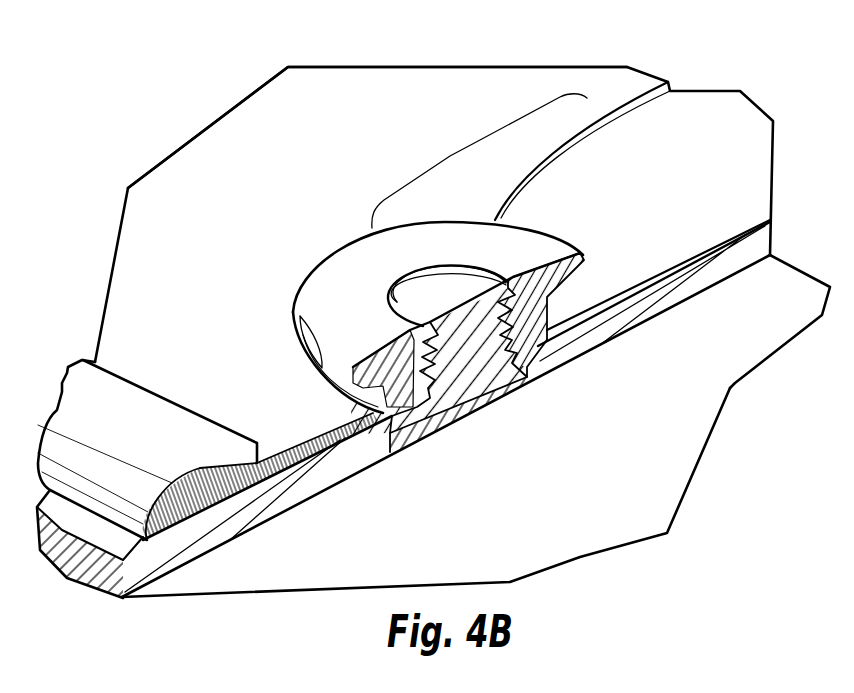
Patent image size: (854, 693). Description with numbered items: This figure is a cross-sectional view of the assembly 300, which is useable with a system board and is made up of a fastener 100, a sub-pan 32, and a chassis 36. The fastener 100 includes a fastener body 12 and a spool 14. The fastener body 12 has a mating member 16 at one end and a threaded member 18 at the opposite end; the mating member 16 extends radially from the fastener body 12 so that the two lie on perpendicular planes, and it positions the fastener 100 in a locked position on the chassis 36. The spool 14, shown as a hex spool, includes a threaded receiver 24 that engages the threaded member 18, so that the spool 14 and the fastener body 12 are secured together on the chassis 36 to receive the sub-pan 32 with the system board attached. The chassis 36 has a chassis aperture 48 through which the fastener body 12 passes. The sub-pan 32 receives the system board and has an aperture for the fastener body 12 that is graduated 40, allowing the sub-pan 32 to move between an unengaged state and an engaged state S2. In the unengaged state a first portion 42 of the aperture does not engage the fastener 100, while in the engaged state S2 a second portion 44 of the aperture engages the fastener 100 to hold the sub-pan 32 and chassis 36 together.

The fastener 100 is at (330, 287).
The sub-pan 32 is at (277, 110).
The chassis 36 is at (697, 278).
The assembly 300 is at (628, 508).
The first portion 42 is at (617, 105).
The graduated aperture 40 is at (480, 140).
The engaged state S2 is at (362, 257).
The spool 14 is at (537, 243).
The threaded receiver 24 is at (580, 256).
The threaded member 18 is at (548, 327).
The mating member 16 is at (477, 375).
The chassis aperture 48 is at (533, 380).
The fastener body 12 is at (533, 382).
The second portion 44 is at (379, 440).